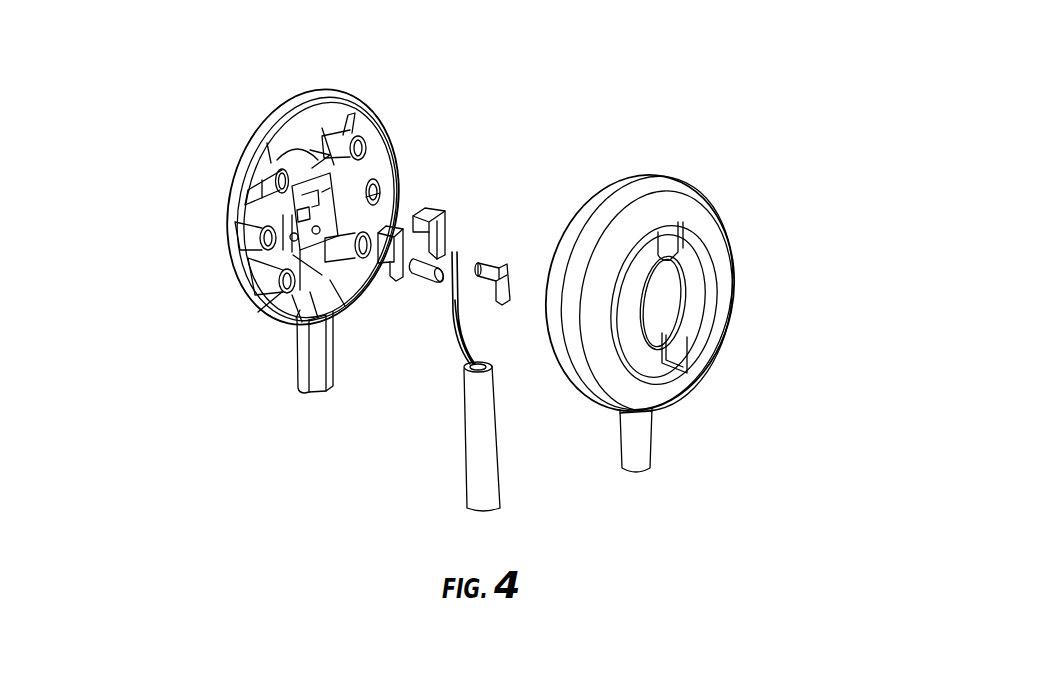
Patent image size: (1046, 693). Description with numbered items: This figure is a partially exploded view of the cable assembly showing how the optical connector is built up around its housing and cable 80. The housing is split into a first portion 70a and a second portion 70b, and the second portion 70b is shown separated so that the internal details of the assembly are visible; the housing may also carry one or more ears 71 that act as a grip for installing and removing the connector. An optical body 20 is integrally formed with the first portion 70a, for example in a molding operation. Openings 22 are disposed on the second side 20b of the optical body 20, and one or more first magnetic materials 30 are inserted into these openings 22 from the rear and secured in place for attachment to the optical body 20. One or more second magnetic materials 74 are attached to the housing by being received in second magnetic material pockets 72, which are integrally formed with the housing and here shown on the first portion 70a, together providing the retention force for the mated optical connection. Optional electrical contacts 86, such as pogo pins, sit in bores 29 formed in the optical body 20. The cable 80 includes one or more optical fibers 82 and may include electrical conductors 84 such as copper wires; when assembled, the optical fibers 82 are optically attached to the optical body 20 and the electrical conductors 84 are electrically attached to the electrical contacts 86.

The first portion of housing 70a is at (231, 157).
The second portion of housing 70b is at (633, 391).
The second side of optical body 20b is at (314, 162).
The second magnetic material pockets 72 is at (367, 144).
The second magnetic materials 74 is at (317, 183).
The optical body 20 is at (318, 183).
The openings 22 is at (326, 193).
The bores 29 is at (292, 320).
The first magnetic materials 30 is at (447, 215).
The electrical contacts 86 is at (427, 279).
The cable 80 is at (488, 427).
The optical fibers 82 is at (450, 296).
The electrical conductors 84 is at (463, 350).
The ears 71 is at (630, 345).